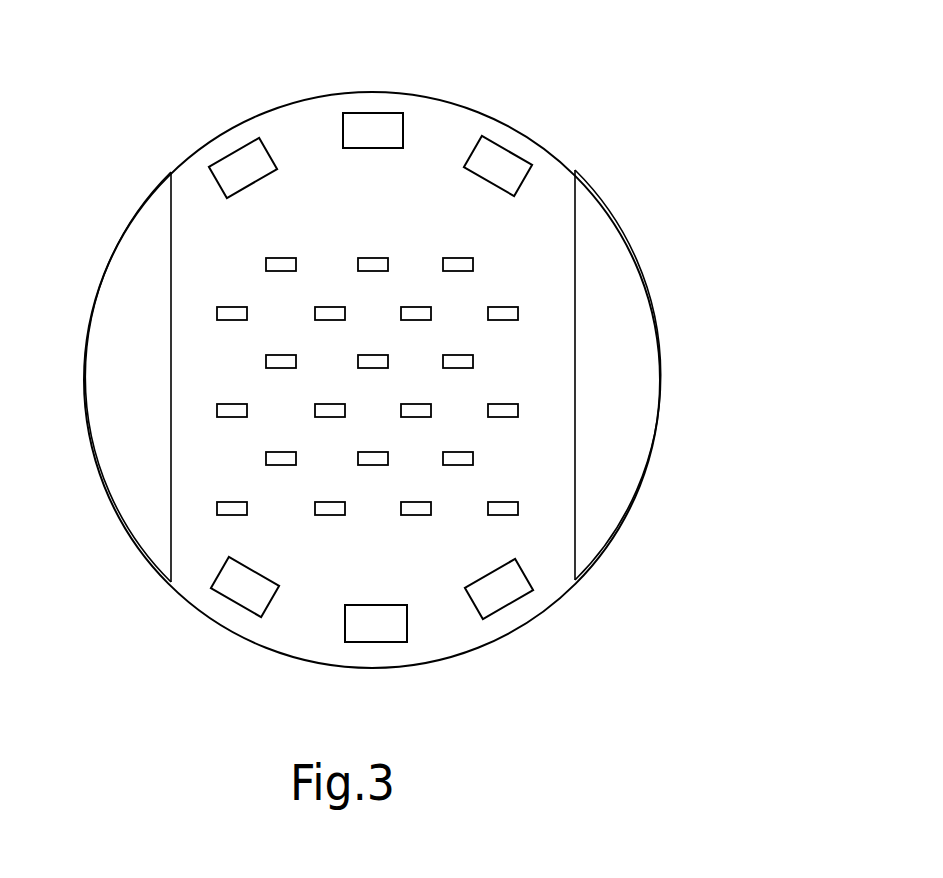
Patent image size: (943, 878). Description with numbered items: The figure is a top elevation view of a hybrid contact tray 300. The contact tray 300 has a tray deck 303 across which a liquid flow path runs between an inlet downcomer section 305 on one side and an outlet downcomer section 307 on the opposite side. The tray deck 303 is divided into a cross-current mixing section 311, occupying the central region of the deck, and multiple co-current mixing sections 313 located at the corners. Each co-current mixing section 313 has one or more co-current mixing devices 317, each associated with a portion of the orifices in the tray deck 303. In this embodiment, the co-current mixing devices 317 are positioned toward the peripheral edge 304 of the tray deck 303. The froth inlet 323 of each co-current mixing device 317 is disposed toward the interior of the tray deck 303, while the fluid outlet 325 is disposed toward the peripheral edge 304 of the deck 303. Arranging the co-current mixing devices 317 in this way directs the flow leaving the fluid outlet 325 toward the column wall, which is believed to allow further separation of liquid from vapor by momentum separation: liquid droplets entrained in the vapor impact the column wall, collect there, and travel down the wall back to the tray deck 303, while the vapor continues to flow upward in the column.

The contact tray 300 is at (658, 120).
The tray deck 303 is at (200, 612).
The peripheral edge 304 is at (530, 620).
The inlet downcomer section 305 is at (607, 255).
The outlet downcomer section 307 is at (144, 230).
The cross-current mixing section 311 is at (420, 360).
The co-current mixing section 313 is at (438, 138).
The co-current mixing device 317 is at (357, 133).
The froth inlet 323 is at (372, 147).
The fluid outlet 325 is at (400, 112).